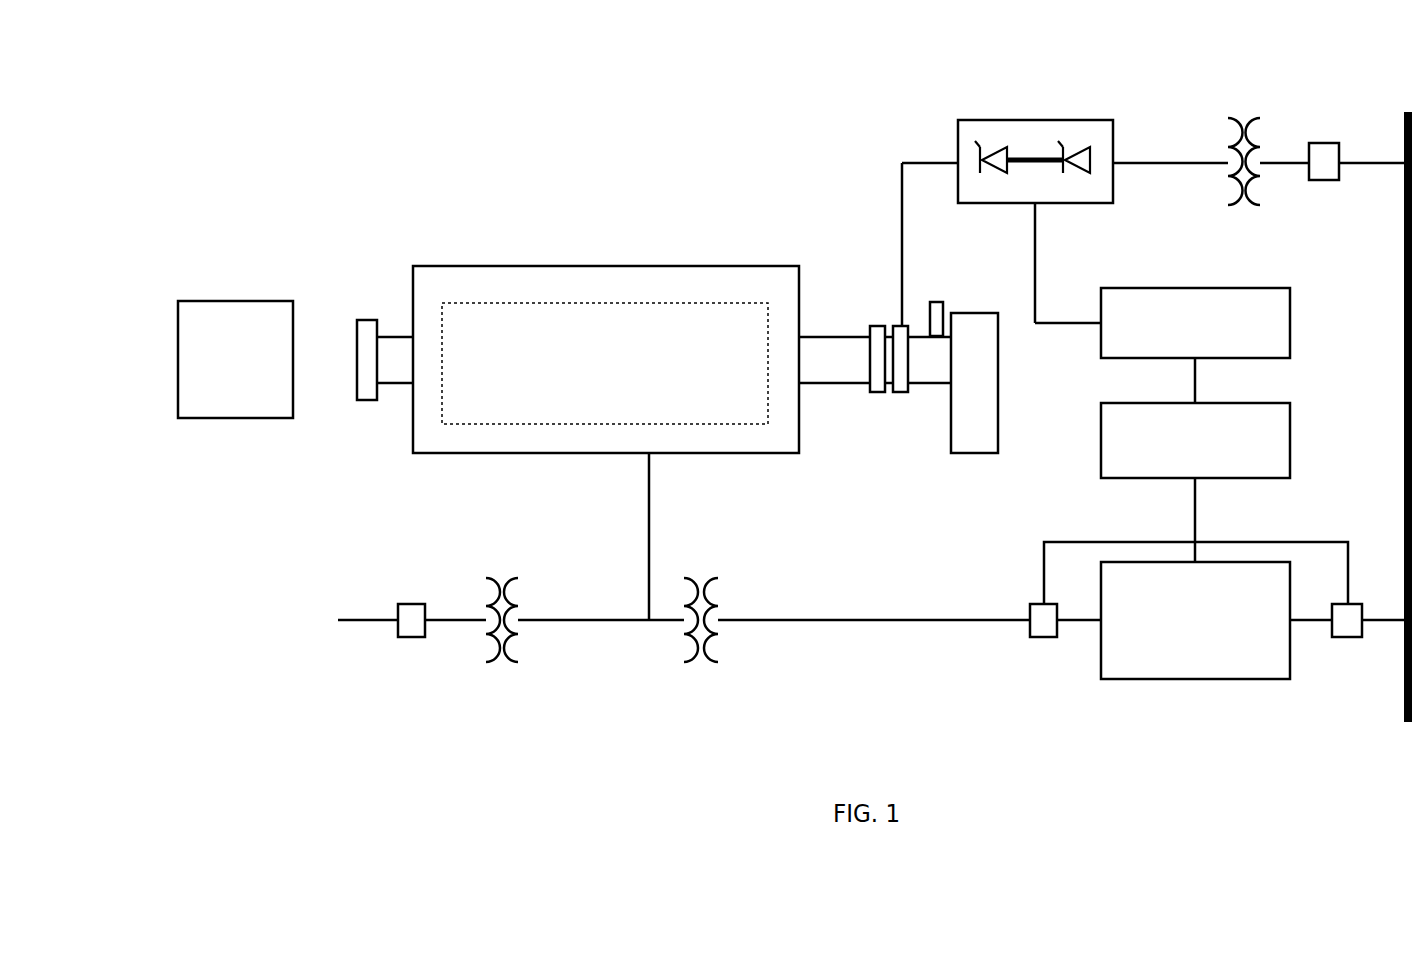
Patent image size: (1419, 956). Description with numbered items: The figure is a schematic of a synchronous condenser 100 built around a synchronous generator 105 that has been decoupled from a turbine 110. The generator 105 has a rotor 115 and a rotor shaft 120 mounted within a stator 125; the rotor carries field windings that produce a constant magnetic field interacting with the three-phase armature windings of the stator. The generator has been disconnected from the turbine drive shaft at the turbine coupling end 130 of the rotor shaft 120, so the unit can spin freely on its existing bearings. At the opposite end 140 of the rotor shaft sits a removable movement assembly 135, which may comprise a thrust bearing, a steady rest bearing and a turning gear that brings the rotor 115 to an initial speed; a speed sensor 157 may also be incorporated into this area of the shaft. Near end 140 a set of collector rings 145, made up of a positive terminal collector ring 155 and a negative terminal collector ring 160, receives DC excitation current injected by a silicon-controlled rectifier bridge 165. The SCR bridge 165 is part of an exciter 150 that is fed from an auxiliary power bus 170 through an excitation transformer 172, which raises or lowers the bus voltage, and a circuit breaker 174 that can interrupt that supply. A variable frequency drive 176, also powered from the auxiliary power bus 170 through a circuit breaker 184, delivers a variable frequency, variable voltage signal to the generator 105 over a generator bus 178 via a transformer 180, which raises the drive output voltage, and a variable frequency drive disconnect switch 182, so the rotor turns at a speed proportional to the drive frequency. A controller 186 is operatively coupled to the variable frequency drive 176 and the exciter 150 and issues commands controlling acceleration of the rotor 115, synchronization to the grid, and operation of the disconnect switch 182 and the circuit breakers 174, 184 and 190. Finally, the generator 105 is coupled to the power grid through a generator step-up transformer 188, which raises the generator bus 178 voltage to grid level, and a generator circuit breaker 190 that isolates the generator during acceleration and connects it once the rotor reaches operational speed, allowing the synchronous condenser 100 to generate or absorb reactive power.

The synchronous condenser 100 is at (180, 147).
The synchronous generator 105 is at (451, 198).
The turbine 110 is at (222, 300).
The rotor 115 is at (665, 302).
The rotor shaft 120 is at (834, 335).
The stator 125 is at (558, 265).
The turbine coupling end 130 is at (367, 318).
The movement assembly 135 is at (999, 368).
The end 140 is at (945, 383).
The collector rings 145 is at (866, 425).
The exciter 150 is at (1179, 288).
The positive terminal collector ring 155 is at (906, 326).
The speed sensor 157 is at (937, 302).
The negative terminal collector ring 160 is at (879, 326).
The silicon-controlled rectifier bridge 165 is at (1015, 120).
The auxiliary power bus 170 is at (1406, 722).
The excitation transformer 172 is at (1241, 113).
The circuit breaker 174 is at (1330, 143).
The variable frequency drive 176 is at (1193, 679).
The generator bus 178 is at (651, 509).
The transformer 180 is at (705, 670).
The variable frequency drive disconnect switch 182 is at (1047, 637).
The circuit breaker 184 is at (1350, 637).
The controller 186 is at (1291, 412).
The generator step-up transformer 188 is at (503, 667).
The generator circuit breaker 190 is at (410, 603).